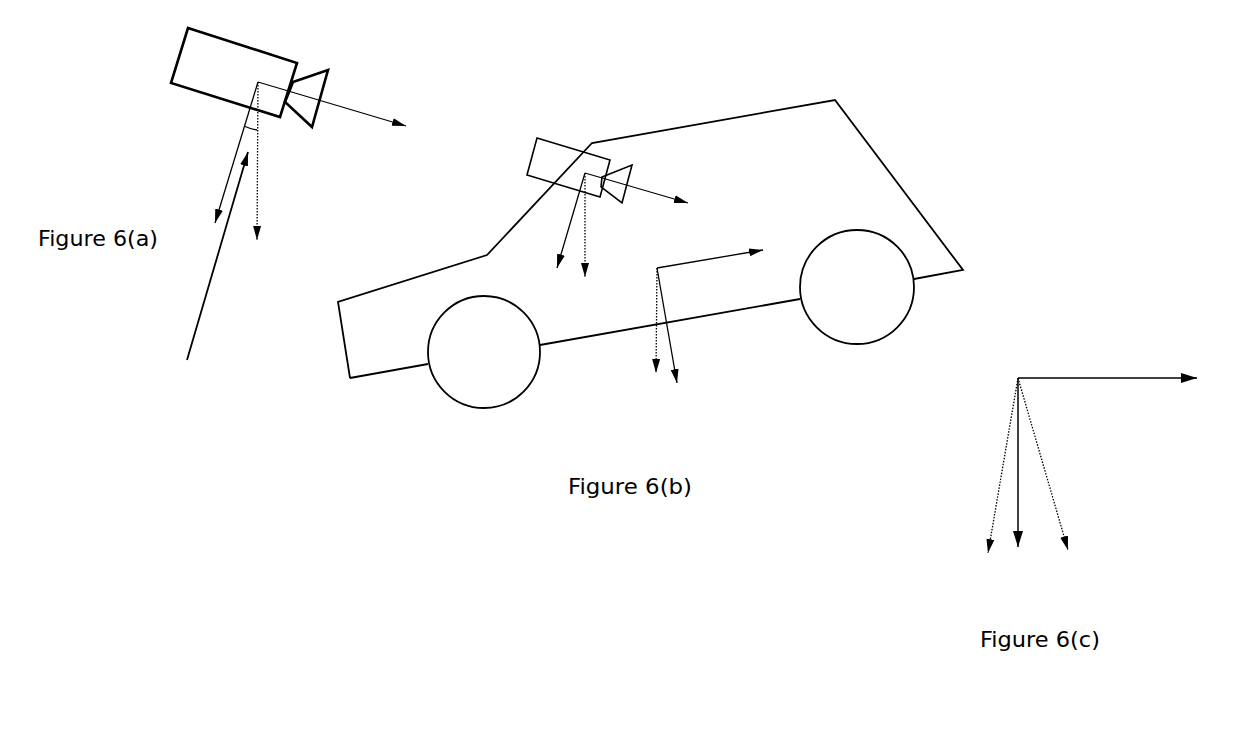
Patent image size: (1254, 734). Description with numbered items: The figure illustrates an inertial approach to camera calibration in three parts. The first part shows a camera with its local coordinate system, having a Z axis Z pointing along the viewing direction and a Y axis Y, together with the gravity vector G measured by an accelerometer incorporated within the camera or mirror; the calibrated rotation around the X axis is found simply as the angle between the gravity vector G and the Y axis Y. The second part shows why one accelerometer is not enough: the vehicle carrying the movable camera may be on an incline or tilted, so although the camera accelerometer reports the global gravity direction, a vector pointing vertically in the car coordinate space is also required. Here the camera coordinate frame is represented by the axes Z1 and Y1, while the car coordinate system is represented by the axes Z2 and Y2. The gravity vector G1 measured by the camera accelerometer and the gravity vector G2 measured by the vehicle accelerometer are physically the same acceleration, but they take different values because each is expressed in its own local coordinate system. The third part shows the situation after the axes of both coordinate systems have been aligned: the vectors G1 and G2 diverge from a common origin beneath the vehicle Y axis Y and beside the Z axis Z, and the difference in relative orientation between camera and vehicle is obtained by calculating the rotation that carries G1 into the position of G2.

In FIG. 6A, the Z axis Z is at (340, 104).
In FIG. 6C, the Z axis Z is at (1110, 348).
In FIG. 6A, the Y axis Y is at (228, 152).
In FIG. 6C, the Y axis Y is at (1033, 477).
In FIG. 6A, the gravity vector G is at (274, 161).
In FIG. 6B, the camera coordinate frame Z axis Z1 is at (646, 188).
In FIG. 6B, the camera coordinate frame Y axis Y1 is at (559, 220).
In FIG. 6B, the gravity vector measured by camera accelerometer G1 is at (601, 226).
In FIG. 6C, the gravity vector measured by camera accelerometer G1 is at (1064, 464).
In FIG. 6B, the car coordinate system Z axis Z2 is at (717, 242).
In FIG. 6B, the car coordinate system Y axis Y2 is at (684, 325).
In FIG. 6B, the gravity vector measured by vehicle accelerometer G2 is at (640, 321).
In FIG. 6C, the gravity vector measured by vehicle accelerometer G2 is at (981, 465).